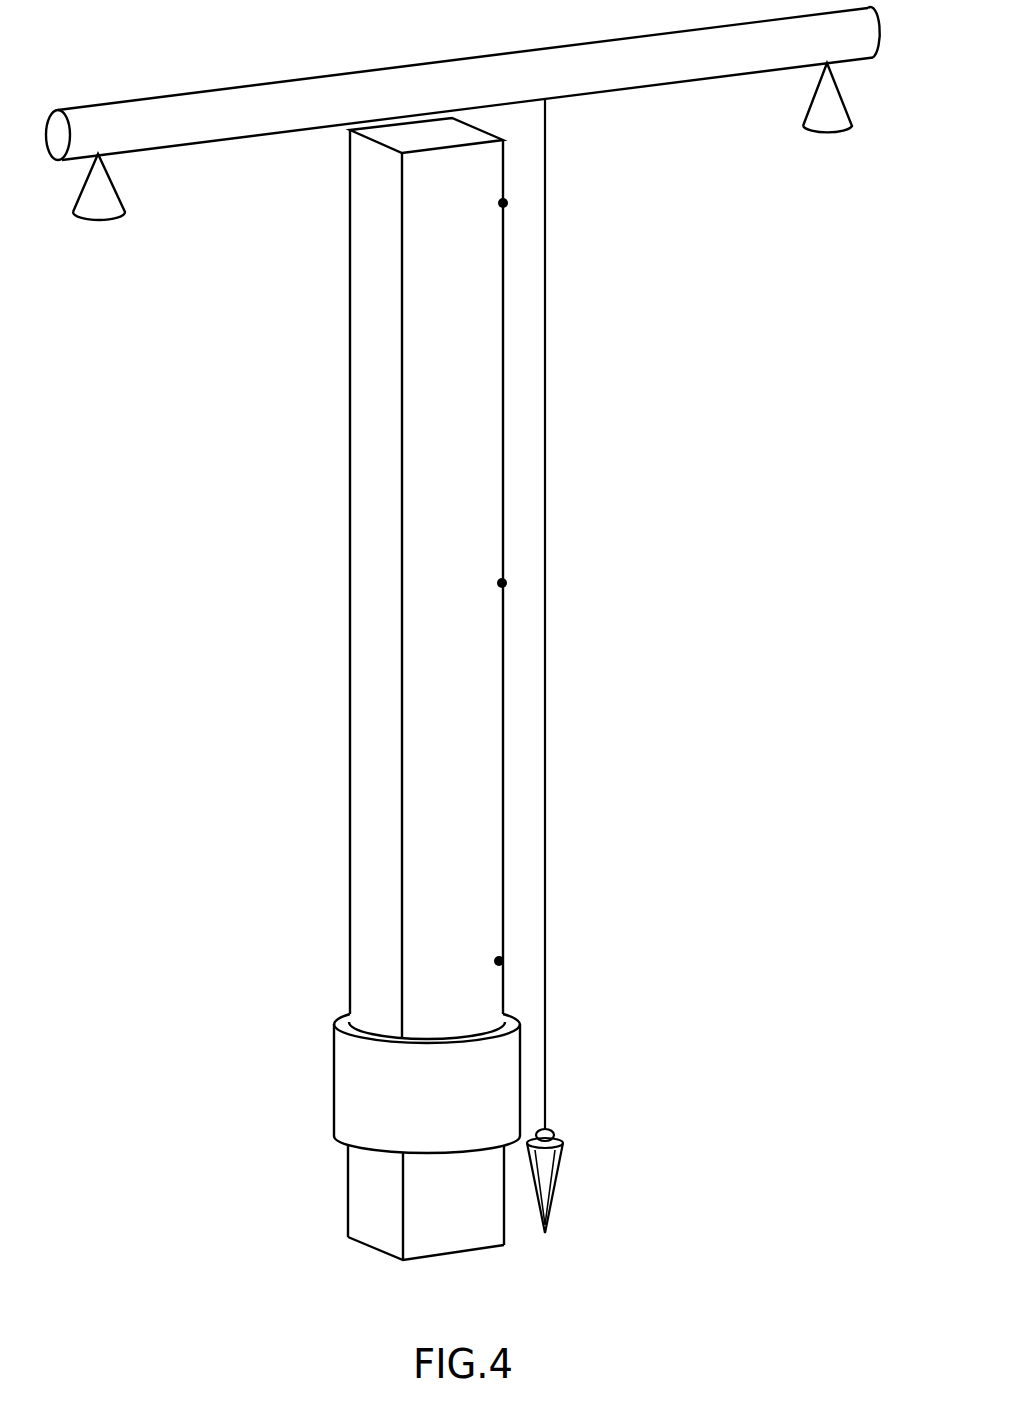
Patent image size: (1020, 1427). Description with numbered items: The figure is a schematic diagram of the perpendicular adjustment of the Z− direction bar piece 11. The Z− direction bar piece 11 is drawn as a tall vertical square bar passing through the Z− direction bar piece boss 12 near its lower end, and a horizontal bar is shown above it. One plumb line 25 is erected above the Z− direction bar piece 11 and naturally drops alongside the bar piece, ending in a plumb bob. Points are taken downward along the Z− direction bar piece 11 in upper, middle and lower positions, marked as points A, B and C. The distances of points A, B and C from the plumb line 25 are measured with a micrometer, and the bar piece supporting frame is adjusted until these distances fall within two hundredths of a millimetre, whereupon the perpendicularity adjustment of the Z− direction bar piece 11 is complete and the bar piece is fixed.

The Z− direction bar piece 11 is at (383, 440).
The Z− direction bar piece boss 12 is at (383, 1085).
The plumb line 25 is at (565, 668).